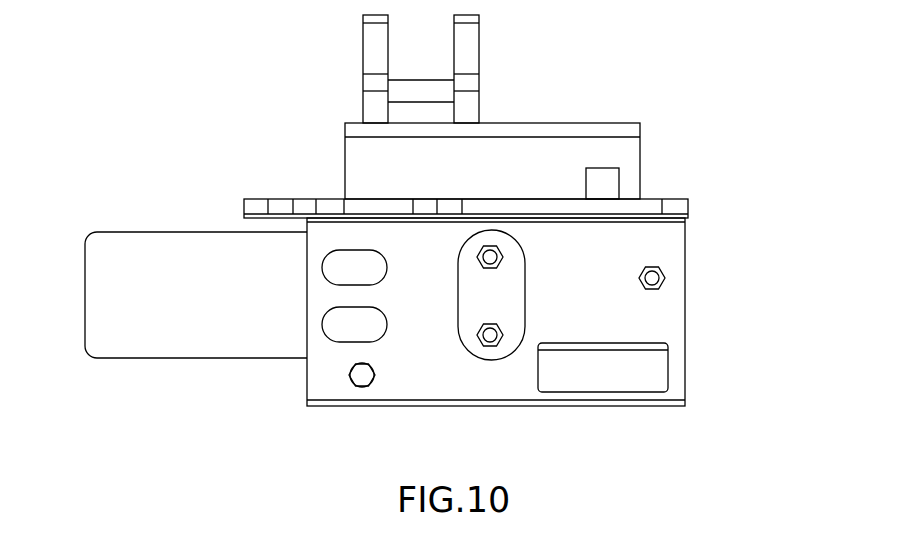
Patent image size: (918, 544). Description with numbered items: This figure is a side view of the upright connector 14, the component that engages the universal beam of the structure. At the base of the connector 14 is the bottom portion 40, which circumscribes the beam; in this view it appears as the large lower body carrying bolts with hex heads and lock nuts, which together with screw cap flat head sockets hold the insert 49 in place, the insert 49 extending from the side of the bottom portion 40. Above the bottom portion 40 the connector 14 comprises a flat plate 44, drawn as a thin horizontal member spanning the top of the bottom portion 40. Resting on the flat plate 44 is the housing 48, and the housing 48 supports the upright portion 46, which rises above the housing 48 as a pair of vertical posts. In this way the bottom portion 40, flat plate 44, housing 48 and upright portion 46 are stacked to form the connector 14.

The upright connector 14 is at (298, 155).
The bottom portion 40 is at (653, 320).
The flat plate 44 is at (256, 199).
The upright portion 46 is at (479, 49).
The housing 48 is at (640, 160).
The insert 49 is at (108, 251).